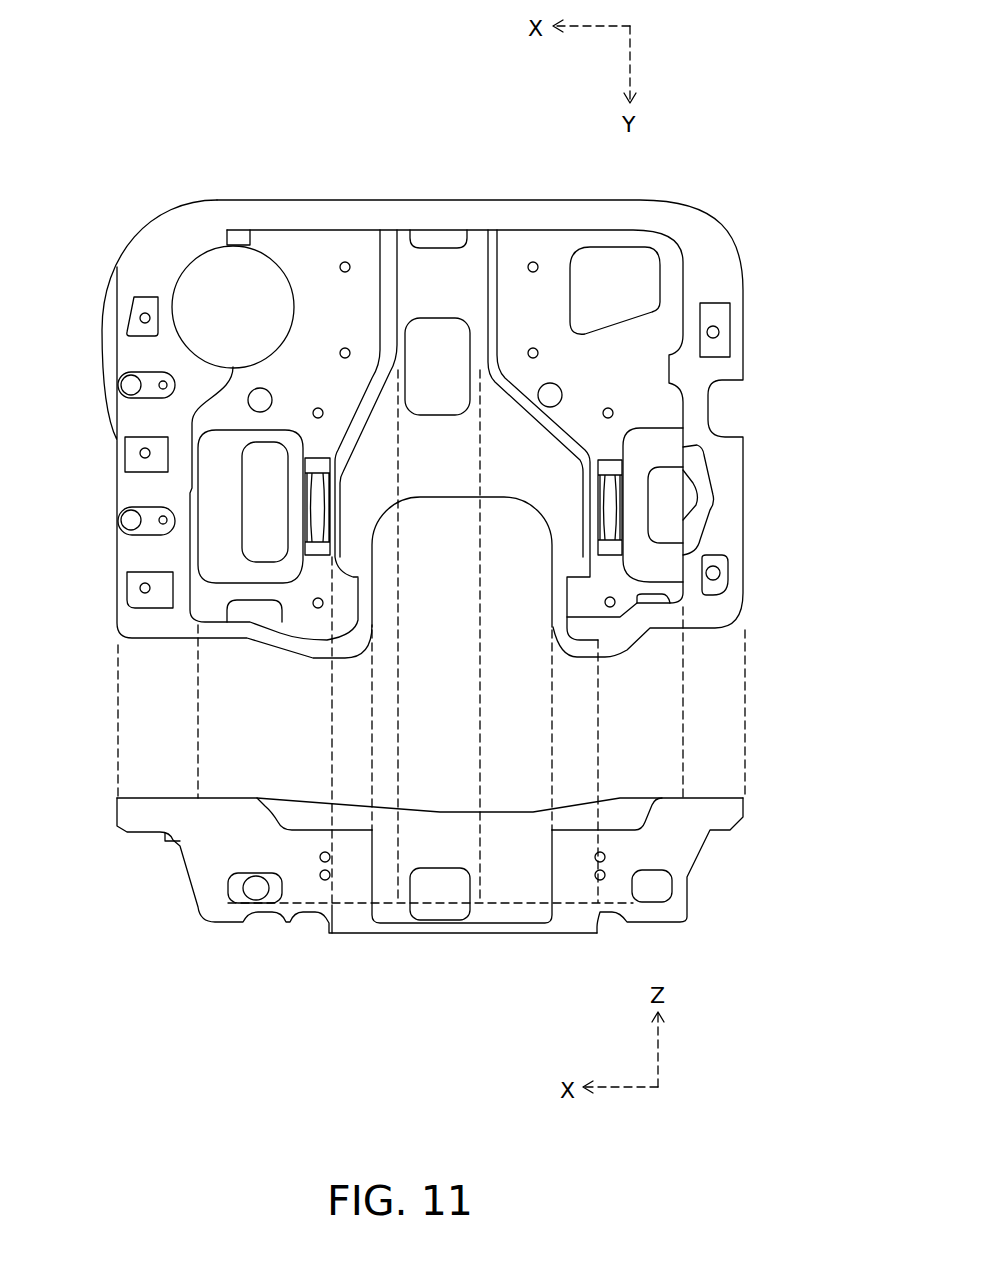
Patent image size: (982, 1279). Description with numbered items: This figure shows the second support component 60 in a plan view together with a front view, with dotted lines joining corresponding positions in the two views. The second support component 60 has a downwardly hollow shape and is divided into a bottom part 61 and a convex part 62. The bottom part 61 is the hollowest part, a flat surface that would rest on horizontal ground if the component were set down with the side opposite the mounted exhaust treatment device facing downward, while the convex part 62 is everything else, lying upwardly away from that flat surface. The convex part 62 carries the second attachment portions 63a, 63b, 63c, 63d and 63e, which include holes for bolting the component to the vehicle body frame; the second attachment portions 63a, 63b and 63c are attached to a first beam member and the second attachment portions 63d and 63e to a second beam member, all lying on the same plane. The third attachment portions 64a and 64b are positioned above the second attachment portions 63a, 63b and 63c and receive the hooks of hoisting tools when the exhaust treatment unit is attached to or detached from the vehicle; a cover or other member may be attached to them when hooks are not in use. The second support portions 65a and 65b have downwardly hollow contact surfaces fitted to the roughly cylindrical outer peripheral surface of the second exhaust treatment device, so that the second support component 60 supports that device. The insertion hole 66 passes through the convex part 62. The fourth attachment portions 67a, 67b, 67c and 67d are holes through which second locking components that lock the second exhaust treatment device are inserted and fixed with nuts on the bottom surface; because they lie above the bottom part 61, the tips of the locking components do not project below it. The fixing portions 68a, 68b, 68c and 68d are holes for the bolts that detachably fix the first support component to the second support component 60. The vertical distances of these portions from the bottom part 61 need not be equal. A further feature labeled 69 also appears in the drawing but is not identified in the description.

The second support component 60 is at (453, 145).
The bottom part 61 is at (443, 465).
The convex part 62 is at (678, 223).
The second attachment portion 63a is at (145, 313).
The second attachment portion 63b is at (140, 450).
The second attachment portion 63c is at (147, 594).
The second attachment portion 63d is at (713, 326).
The second attachment portion 63e is at (713, 580).
The third attachment portion 64a is at (159, 385).
The third attachment portion 64b is at (152, 523).
The second support portion 65a is at (316, 917).
The second support portion 65b is at (607, 905).
The insertion hole 66 is at (250, 245).
The fourth attachment portion 67a is at (318, 408).
The fourth attachment portion 67b is at (318, 608).
The fourth attachment portion 67c is at (608, 408).
The fourth attachment portion 67d is at (610, 607).
The fixing portion 68a is at (345, 262).
The fixing portion 68b is at (345, 348).
The fixing portion 68c is at (533, 262).
The fixing portion 68d is at (530, 350).
The rib 69 is at (490, 495).